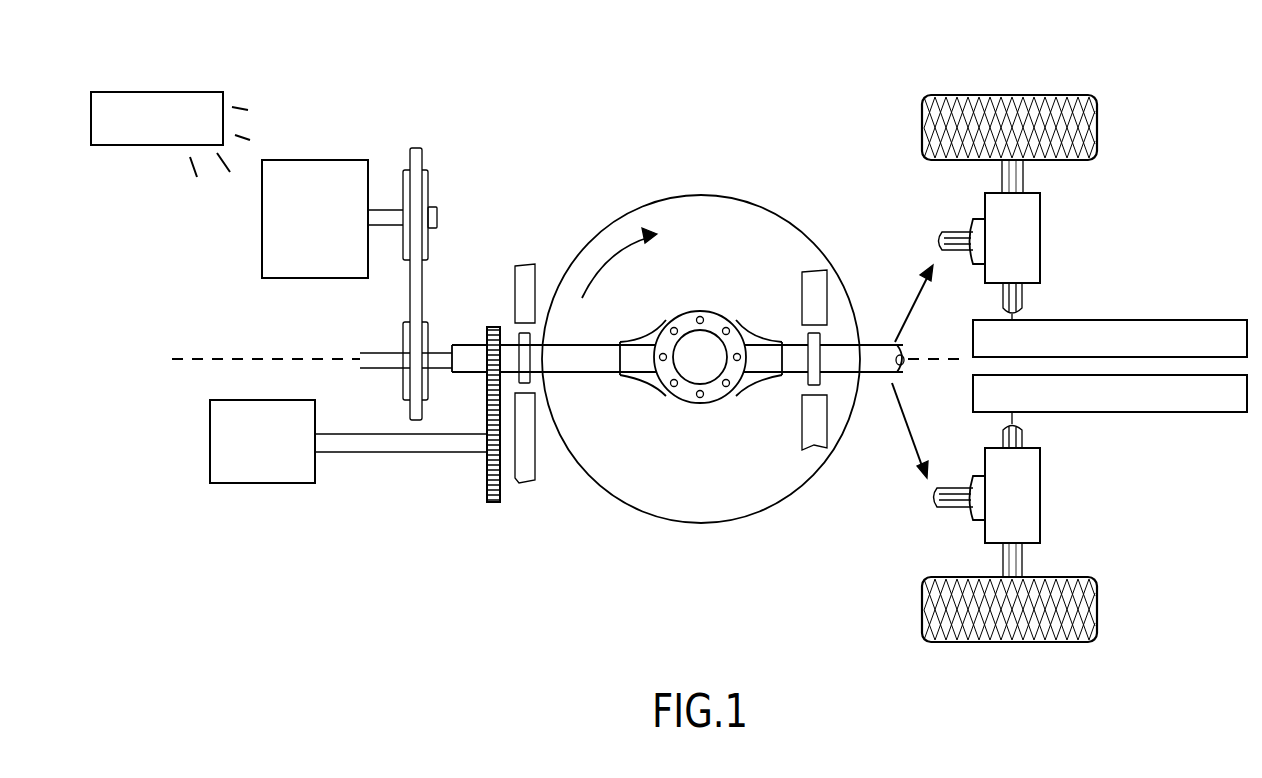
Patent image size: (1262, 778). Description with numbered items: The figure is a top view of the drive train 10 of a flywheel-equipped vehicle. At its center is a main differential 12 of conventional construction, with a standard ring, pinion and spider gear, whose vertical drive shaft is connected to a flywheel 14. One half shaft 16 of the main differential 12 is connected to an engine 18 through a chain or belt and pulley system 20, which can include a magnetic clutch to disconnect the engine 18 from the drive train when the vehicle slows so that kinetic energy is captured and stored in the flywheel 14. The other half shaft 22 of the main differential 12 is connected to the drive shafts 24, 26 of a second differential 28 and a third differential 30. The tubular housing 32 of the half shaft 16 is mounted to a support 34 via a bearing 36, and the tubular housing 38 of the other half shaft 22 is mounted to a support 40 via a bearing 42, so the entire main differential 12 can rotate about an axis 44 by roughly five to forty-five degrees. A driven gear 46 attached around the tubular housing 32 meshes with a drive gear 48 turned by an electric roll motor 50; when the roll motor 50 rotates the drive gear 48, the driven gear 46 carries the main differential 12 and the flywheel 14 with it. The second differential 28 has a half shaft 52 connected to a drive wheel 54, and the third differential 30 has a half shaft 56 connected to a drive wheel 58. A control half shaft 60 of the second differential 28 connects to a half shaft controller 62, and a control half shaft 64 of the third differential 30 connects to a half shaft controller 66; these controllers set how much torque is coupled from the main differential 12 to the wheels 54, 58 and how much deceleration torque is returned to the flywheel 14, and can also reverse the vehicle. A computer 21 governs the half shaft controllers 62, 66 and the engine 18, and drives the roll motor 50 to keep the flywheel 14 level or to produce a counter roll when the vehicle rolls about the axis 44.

The drive train 10 is at (786, 110).
The main differential 12 is at (690, 406).
The flywheel 14 is at (785, 236).
The half shaft 16 is at (438, 350).
The engine 18 is at (335, 160).
The chain or belt and pulley system 20 is at (445, 175).
The computer 21 is at (205, 92).
The other half shaft 22 is at (905, 360).
The drive shaft 24 is at (960, 228).
The drive shaft 26 is at (940, 510).
The second differential 28 is at (1042, 245).
The third differential 30 is at (1042, 505).
The tubular housing 32 is at (463, 377).
The support 34 is at (536, 282).
The bearing 36 is at (546, 385).
The tubular housing 38 is at (792, 393).
The support 40 is at (836, 400).
The bearing 42 is at (823, 365).
The axis 44 is at (195, 358).
The driven gear 46 is at (495, 328).
The drive gear 48 is at (494, 503).
The roll motor 50 is at (240, 484).
The half shaft 52 is at (1025, 178).
The drive wheel 54 is at (1100, 130).
The half shaft 56 is at (1027, 560).
The drive wheel 58 is at (1100, 603).
The control half shaft 60 is at (1027, 300).
The half shaft controller 62 is at (1143, 320).
The control half shaft 64 is at (1027, 432).
The half shaft controller 66 is at (1163, 412).